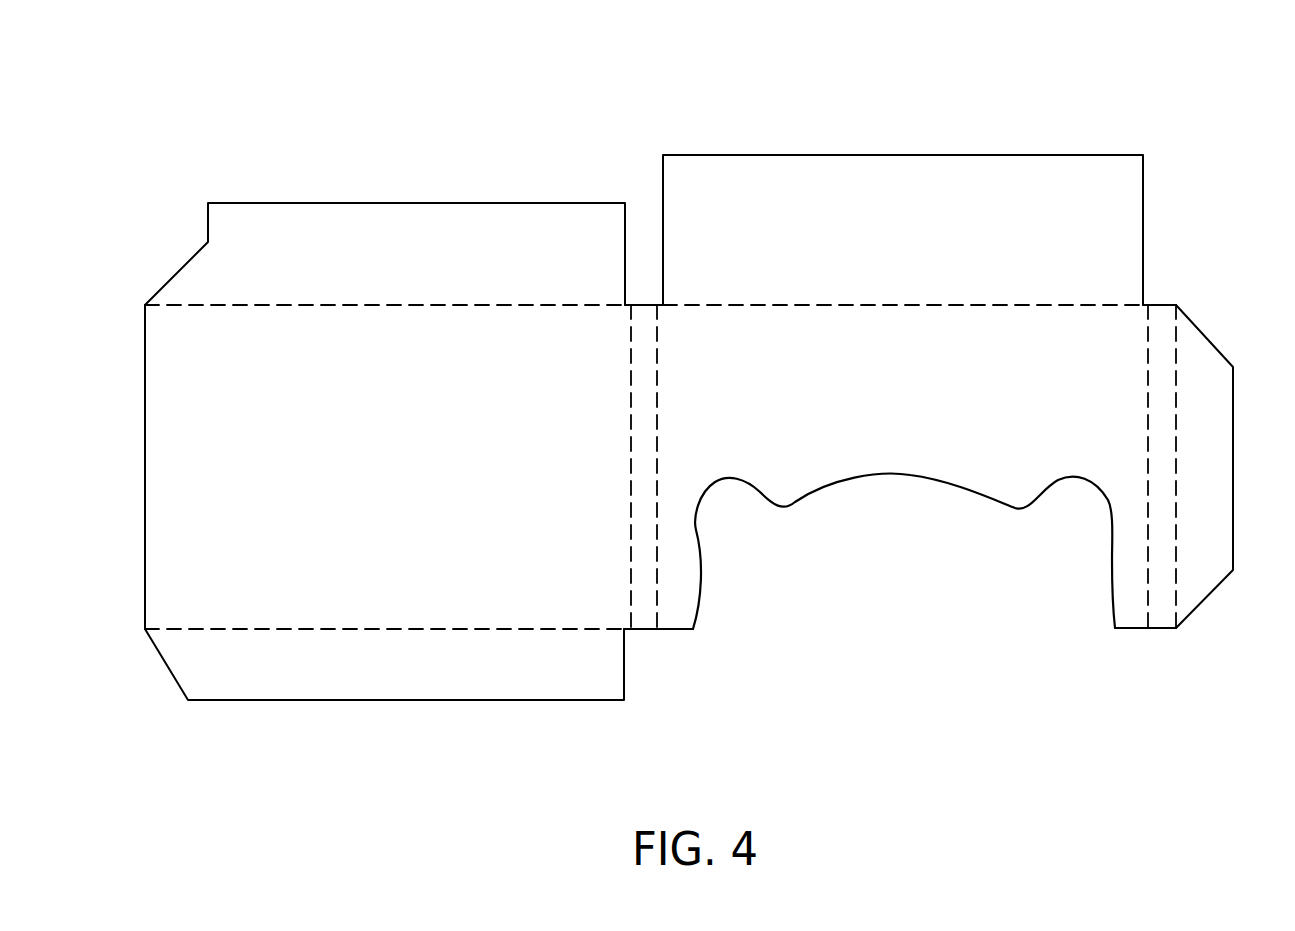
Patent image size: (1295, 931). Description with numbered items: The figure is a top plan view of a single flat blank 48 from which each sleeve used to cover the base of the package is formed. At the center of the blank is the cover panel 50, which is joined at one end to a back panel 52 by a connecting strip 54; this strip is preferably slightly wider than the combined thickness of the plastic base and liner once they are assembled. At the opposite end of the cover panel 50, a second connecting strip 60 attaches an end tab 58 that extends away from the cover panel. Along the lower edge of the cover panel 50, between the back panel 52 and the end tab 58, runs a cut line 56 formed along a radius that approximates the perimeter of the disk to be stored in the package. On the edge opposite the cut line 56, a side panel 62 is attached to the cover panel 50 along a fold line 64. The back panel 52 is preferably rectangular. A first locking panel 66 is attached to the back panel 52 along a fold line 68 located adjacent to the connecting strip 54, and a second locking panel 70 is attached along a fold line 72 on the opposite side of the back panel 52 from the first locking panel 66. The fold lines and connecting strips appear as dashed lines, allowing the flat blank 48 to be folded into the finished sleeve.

The blank 48 is at (641, 222).
The cover panel 50 is at (904, 494).
The back panel 52 is at (385, 427).
The connecting strip 54 is at (641, 403).
The cut line 56 is at (928, 479).
The end tab 58 is at (1200, 368).
The connecting strip 60 is at (1162, 615).
The side panel 62 is at (903, 193).
The fold line 64 is at (802, 305).
The first locking panel 66 is at (303, 230).
The fold line 68 is at (343, 305).
The second locking panel 70 is at (471, 681).
The fold line 72 is at (340, 629).